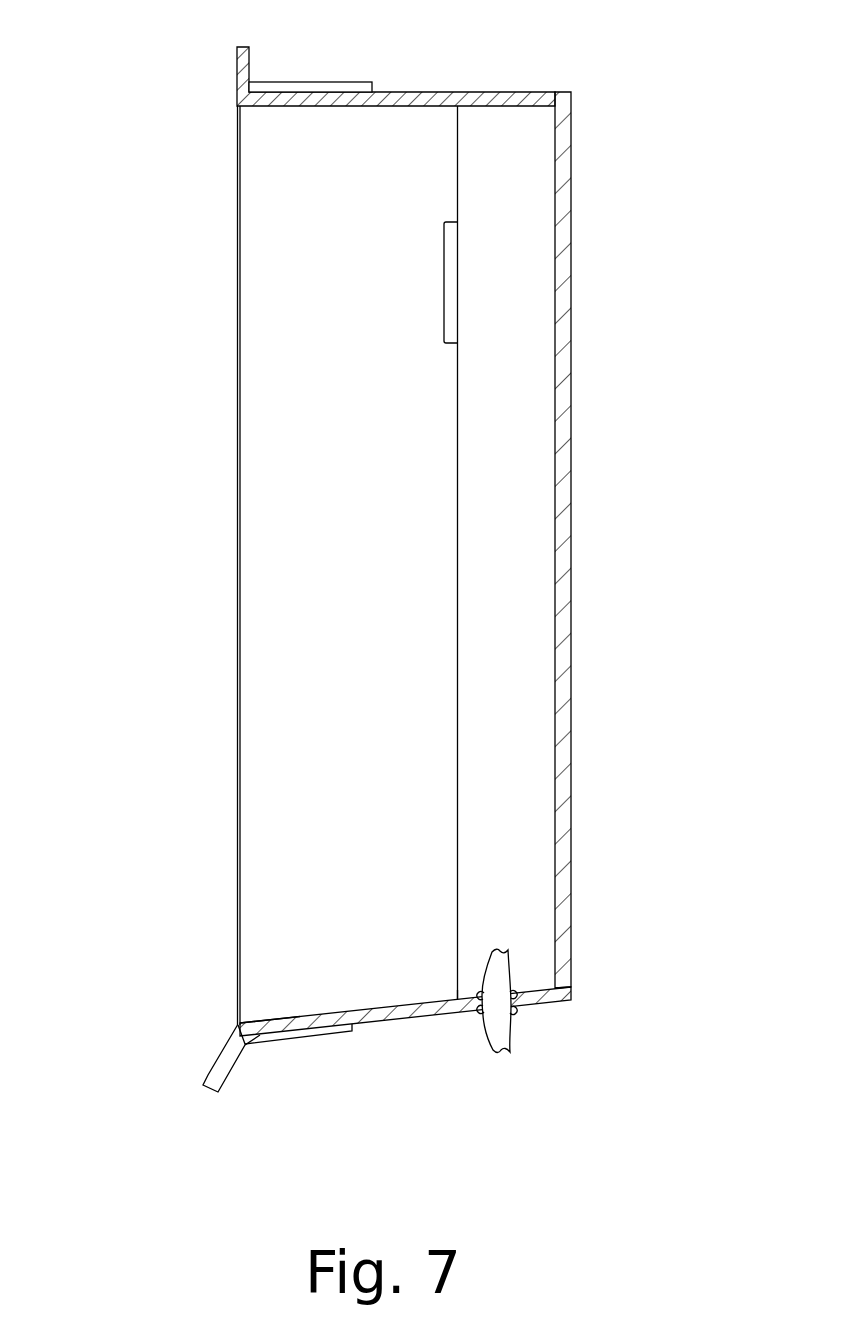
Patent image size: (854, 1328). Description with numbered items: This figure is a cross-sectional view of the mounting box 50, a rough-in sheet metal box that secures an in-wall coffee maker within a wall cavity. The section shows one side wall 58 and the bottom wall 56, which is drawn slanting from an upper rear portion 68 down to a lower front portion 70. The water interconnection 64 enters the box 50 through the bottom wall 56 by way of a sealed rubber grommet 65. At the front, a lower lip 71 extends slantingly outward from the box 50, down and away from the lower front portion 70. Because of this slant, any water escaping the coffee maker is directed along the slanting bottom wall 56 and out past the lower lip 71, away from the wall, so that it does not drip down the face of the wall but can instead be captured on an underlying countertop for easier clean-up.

The mounting box 50 is at (397, 78).
The side wall 58 is at (512, 645).
The bottom wall 56 is at (384, 1021).
The water interconnection 64 is at (510, 950).
The upper rear portion 68 is at (537, 986).
The sealed rubber grommet 65 is at (480, 990).
The lower front portion 70 is at (270, 1019).
The lower lip 71 is at (203, 1077).